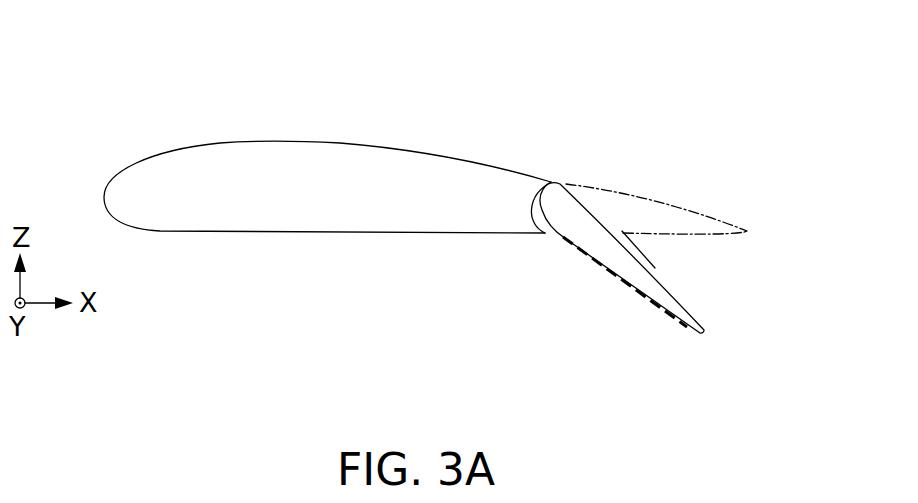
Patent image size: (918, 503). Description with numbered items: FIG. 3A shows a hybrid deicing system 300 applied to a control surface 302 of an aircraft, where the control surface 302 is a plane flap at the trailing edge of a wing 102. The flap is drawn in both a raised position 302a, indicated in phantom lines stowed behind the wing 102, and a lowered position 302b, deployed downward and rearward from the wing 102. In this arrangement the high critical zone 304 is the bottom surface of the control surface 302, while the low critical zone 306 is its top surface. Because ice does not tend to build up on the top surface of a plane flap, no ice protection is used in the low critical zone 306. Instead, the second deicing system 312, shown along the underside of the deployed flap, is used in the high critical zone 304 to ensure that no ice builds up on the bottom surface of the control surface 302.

The hybrid deicing system 300 is at (153, 103).
The wing 102 is at (340, 148).
The control surface 302 is at (630, 177).
The raised position 302a is at (677, 207).
The lowered position 302b is at (688, 302).
The high critical zone 304 is at (522, 281).
The low critical zone 306 is at (653, 268).
The second deicing system 312 is at (628, 285).